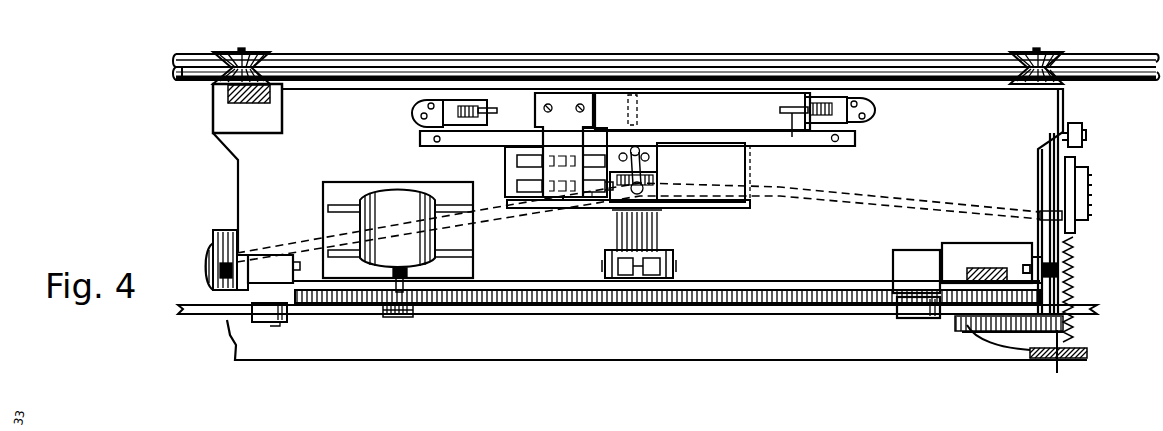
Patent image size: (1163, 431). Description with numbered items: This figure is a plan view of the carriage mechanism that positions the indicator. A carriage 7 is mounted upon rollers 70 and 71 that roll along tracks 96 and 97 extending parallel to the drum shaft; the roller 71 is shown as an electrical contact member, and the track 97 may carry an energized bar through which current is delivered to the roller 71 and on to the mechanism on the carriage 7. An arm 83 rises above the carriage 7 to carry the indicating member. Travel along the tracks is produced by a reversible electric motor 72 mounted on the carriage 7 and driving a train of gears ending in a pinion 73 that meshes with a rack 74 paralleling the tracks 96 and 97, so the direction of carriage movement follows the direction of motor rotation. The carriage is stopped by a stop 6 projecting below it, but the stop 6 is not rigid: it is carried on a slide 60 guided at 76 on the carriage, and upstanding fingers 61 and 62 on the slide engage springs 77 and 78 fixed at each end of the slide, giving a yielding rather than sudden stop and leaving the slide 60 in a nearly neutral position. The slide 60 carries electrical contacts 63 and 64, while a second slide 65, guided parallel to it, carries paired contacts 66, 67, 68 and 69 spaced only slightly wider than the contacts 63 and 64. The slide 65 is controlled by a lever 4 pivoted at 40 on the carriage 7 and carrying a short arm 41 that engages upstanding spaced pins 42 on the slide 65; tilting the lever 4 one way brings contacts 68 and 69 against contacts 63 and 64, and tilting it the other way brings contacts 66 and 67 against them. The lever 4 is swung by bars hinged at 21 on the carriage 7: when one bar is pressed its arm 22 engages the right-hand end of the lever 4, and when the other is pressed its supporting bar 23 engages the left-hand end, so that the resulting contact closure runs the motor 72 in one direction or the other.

The lever 4 is at (870, 192).
The stop 6 is at (640, 108).
The carriage 7 is at (637, 231).
The hinge 21 is at (676, 267).
The arm 22 is at (1070, 260).
The supporting bar 23 is at (209, 262).
The pivot 40 is at (655, 203).
The short arm 41 is at (633, 153).
The upstanding spaced pins 42 is at (647, 160).
The slide 60 is at (702, 111).
The upstanding finger 61 is at (792, 138).
The upstanding finger 62 is at (490, 117).
The electrical contact 63 is at (562, 153).
The electrical contact 64 is at (563, 193).
The second slide 65 is at (703, 172).
The contact 66 is at (526, 162).
The contact 67 is at (533, 190).
The contact 68 is at (595, 158).
The contact 69 is at (592, 184).
The roller 70 is at (213, 85).
The roller 71 is at (263, 322).
The electric motor 72 is at (398, 237).
The pinion 73 is at (410, 306).
The rack 74 is at (515, 306).
The guide 76 is at (757, 137).
The spring 77 is at (827, 107).
The spring 78 is at (428, 127).
The arm 83 is at (983, 268).
The track 96 is at (384, 64).
The track 97 is at (205, 313).